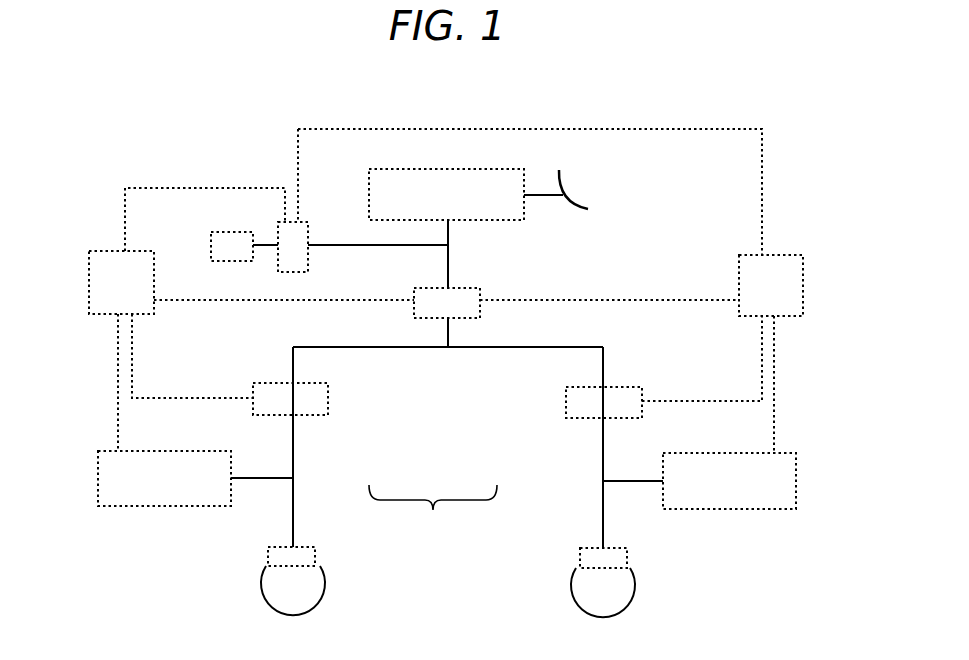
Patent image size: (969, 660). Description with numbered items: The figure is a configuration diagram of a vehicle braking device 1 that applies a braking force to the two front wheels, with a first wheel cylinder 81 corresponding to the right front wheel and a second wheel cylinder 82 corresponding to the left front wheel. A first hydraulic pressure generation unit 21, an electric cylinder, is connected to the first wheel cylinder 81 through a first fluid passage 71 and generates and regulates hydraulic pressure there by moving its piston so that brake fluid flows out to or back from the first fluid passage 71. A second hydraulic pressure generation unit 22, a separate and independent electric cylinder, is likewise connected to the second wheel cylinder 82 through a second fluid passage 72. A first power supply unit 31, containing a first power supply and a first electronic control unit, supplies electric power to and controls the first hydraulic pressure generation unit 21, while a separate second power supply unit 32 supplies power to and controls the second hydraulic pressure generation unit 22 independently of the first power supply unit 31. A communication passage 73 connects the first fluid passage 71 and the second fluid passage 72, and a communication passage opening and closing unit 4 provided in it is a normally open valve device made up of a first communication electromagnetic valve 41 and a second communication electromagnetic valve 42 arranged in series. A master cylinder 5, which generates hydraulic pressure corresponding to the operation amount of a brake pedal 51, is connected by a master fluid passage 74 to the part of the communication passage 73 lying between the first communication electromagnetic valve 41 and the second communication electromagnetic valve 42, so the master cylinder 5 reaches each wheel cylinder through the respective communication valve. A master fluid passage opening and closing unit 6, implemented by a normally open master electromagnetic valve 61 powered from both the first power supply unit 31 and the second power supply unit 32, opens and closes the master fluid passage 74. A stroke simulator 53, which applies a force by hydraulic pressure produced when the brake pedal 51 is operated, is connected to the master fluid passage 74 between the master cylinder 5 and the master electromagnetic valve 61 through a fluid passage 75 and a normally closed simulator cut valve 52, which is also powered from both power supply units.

The vehicle braking device 1 is at (116, 96).
The communication passage opening and closing unit 4 is at (433, 516).
The first communication electromagnetic valve 41 is at (318, 410).
The second communication electromagnetic valve 42 is at (566, 407).
The master cylinder 5 is at (451, 178).
The brake pedal 51 is at (563, 184).
The simulator cut valve 52 is at (311, 233).
The stroke simulator 53 is at (205, 245).
The master fluid passage opening and closing unit 6 is at (467, 297).
The master electromagnetic valve 61 is at (463, 308).
The first hydraulic pressure generation unit 21 is at (153, 500).
The second hydraulic pressure generation unit 22 is at (715, 497).
The first power supply unit 31 is at (103, 260).
The second power supply unit 32 is at (789, 272).
The first fluid passage 71 is at (282, 507).
The second fluid passage 72 is at (607, 515).
The communication passage 73 is at (363, 347).
The master fluid passage 74 is at (450, 260).
The fluid passage 75 is at (397, 250).
The first wheel cylinder 81 is at (303, 555).
The second wheel cylinder 82 is at (590, 555).